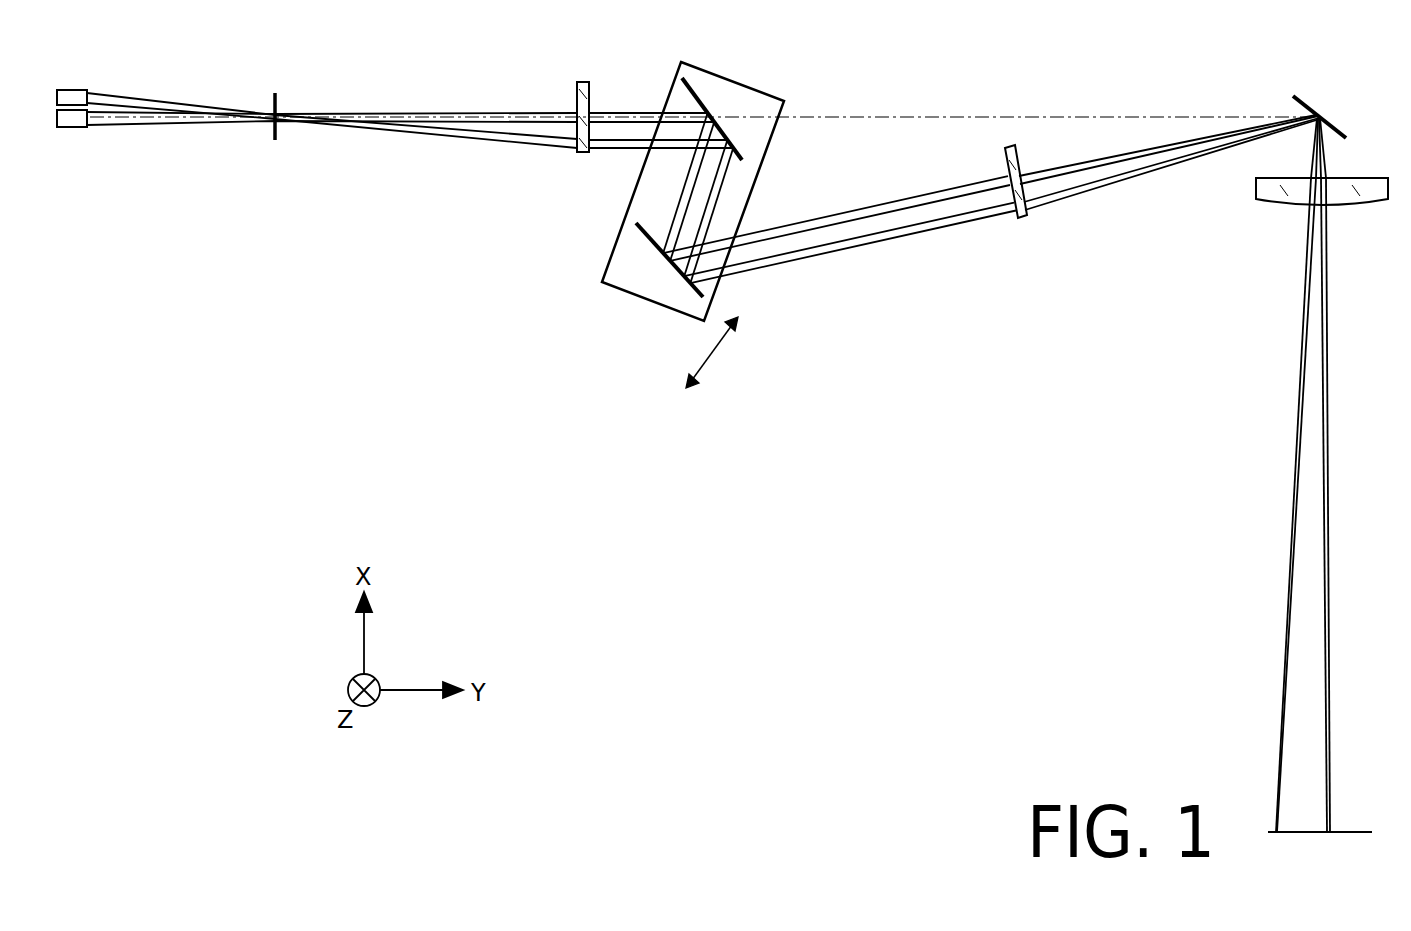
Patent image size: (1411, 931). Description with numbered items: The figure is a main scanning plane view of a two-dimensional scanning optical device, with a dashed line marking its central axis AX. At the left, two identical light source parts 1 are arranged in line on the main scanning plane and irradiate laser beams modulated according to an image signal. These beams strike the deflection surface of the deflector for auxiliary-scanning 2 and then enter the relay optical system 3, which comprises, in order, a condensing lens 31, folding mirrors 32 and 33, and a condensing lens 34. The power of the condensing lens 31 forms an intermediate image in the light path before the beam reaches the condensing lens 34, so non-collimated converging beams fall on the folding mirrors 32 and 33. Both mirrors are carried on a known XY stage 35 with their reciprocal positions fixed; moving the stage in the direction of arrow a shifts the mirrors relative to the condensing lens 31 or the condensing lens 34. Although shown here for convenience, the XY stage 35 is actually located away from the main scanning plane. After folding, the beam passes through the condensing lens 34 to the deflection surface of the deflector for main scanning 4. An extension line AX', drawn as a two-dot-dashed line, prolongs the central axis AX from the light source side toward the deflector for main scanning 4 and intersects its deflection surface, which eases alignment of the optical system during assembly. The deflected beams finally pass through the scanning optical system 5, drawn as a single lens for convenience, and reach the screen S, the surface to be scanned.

The light source part 1 is at (77, 90).
The deflector for auxiliary-scanning 2 is at (278, 98).
The relay optical system 3 is at (835, 308).
The condensing lens 31 is at (590, 92).
The folding mirror 32 is at (704, 103).
The folding mirror 33 is at (650, 241).
The condensing lens 34 is at (1003, 155).
The XY stage 35 is at (764, 93).
The deflector for main scanning 4 is at (1307, 94).
The scanning optical system 5 is at (1358, 178).
The central axis AX is at (395, 92).
The extension line AX' is at (1009, 91).
The screen S is at (1366, 831).
The arrow a is at (712, 352).